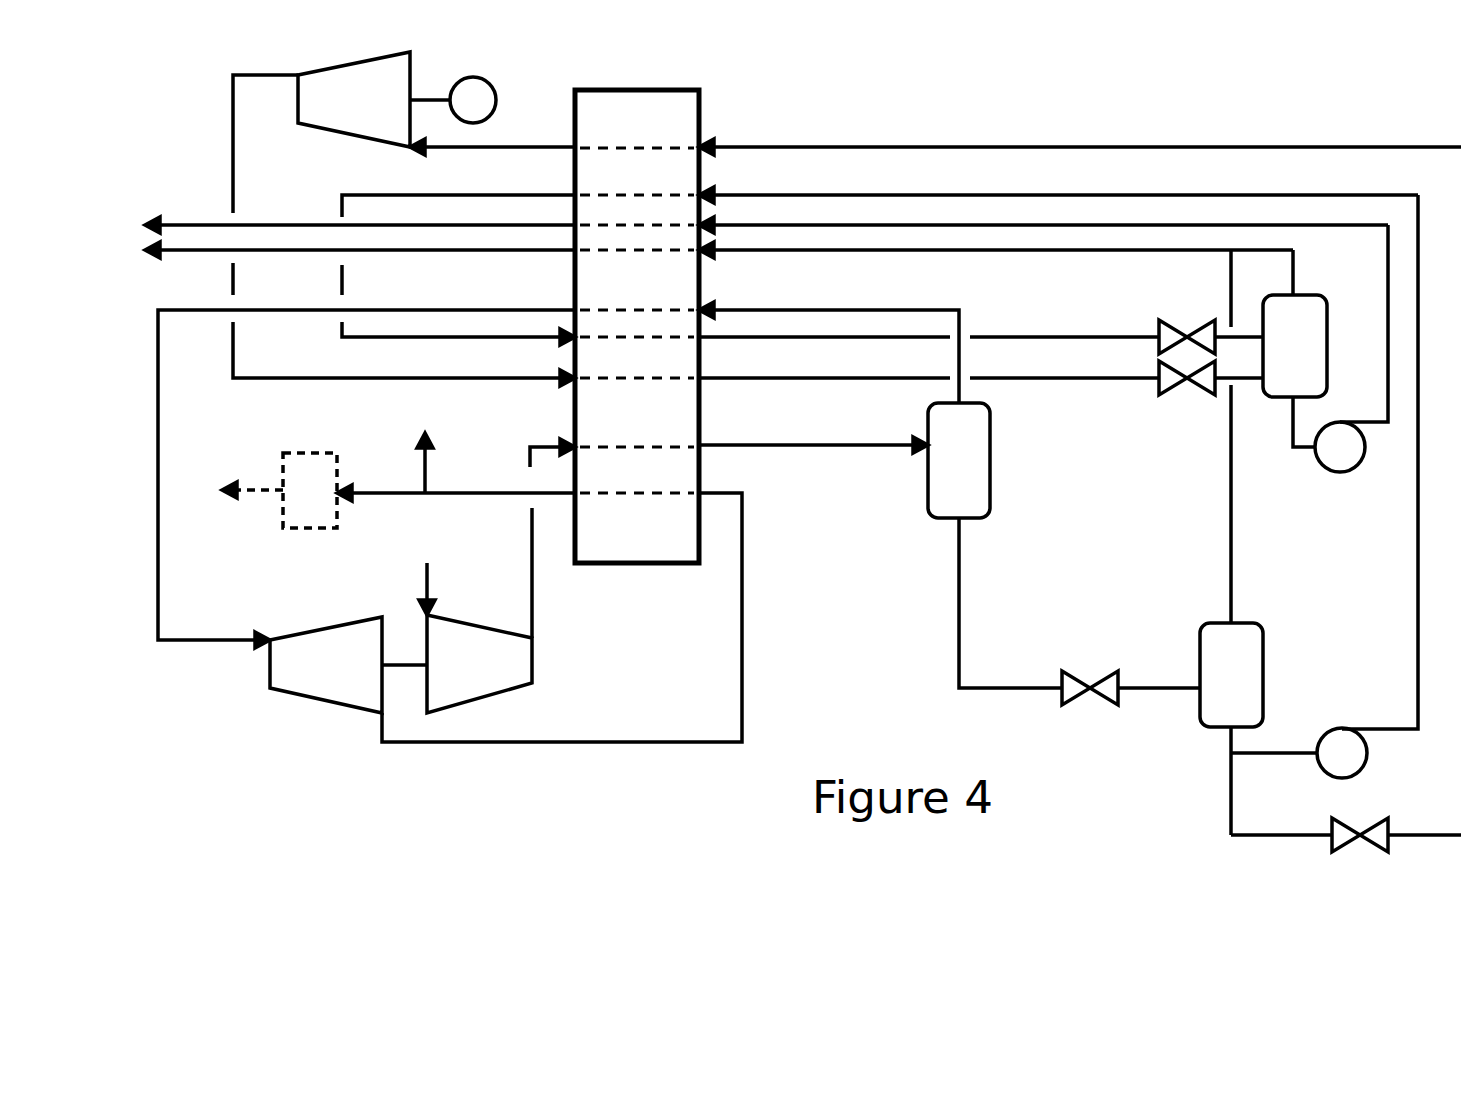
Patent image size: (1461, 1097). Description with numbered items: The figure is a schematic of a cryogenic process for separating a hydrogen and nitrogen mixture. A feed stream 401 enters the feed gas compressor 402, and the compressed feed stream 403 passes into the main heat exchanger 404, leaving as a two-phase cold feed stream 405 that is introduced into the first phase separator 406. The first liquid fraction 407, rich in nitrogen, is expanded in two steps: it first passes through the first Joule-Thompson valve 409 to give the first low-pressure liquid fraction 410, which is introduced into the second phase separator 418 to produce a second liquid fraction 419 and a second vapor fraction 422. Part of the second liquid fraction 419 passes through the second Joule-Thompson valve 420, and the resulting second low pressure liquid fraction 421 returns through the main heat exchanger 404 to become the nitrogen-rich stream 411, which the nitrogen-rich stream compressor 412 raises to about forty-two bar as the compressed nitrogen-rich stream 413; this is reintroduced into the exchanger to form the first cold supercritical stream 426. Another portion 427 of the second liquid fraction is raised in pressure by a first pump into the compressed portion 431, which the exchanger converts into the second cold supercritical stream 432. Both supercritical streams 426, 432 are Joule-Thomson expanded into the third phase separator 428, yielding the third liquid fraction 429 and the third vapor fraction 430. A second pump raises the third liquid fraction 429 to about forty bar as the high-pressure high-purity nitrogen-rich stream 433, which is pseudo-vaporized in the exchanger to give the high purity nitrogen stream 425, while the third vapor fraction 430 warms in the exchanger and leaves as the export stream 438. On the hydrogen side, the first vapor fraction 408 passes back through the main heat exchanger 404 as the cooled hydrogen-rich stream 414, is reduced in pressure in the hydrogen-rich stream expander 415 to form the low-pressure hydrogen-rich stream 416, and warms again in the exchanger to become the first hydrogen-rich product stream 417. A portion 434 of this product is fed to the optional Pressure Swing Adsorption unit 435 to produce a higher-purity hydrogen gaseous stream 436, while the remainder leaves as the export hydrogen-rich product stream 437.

The feed stream 401 is at (423, 575).
The feed gas compressor 402 is at (479, 610).
The compressed feed stream 403 is at (546, 438).
The main heat exchanger 404 is at (880, 326).
The cold feed stream 405 is at (813, 432).
The first phase separator 406 is at (959, 460).
The first liquid fraction 407 is at (1010, 603).
The first vapor fraction 408 is at (829, 341).
The first Joule-Thompson valve 409 is at (1090, 703).
The first low-pressure liquid fraction 410 is at (1159, 673).
The nitrogen-rich stream 411 is at (935, 136).
The nitrogen-rich stream compressor 412 is at (397, 99).
The compressed nitrogen-rich stream 413 is at (382, 230).
The cooled hydrogen-rich stream 414 is at (366, 491).
The hydrogen-rich stream expander 415 is at (348, 665).
The low-pressure hydrogen-rich stream 416 is at (562, 617).
The first hydrogen-rich product stream 417 is at (500, 477).
The second phase separator 418 is at (1231, 675).
The second liquid fraction 419 is at (1214, 743).
The second Joule-Thompson valve 420 is at (1309, 823).
The second low pressure liquid fraction 421 is at (1424, 814).
The second vapor fraction 422 is at (1253, 436).
The second hydrogen-rich product stream 425 is at (744, 224).
The first cold supercritical stream 426 is at (981, 385).
The portion of second liquid fraction 427 is at (1299, 752).
The third phase separator 428 is at (1295, 346).
The third liquid fraction 429 is at (1329, 434).
The third vapor fraction 430 is at (1270, 272).
The compressed portion of second liquid fraction 431 is at (1380, 462).
The second cold supercritical stream 432 is at (981, 332).
The high-pressure high-purity nitrogen-rich stream 433 is at (1364, 323).
The portion of first hydrogen-rich product stream 434 is at (381, 481).
The Pressure Swing Adsorption unit 435 is at (310, 490).
The hydrogen gaseous stream 436 is at (229, 487).
The export hydrogen-rich product stream 437 is at (426, 450).
The export stream 438 is at (696, 249).